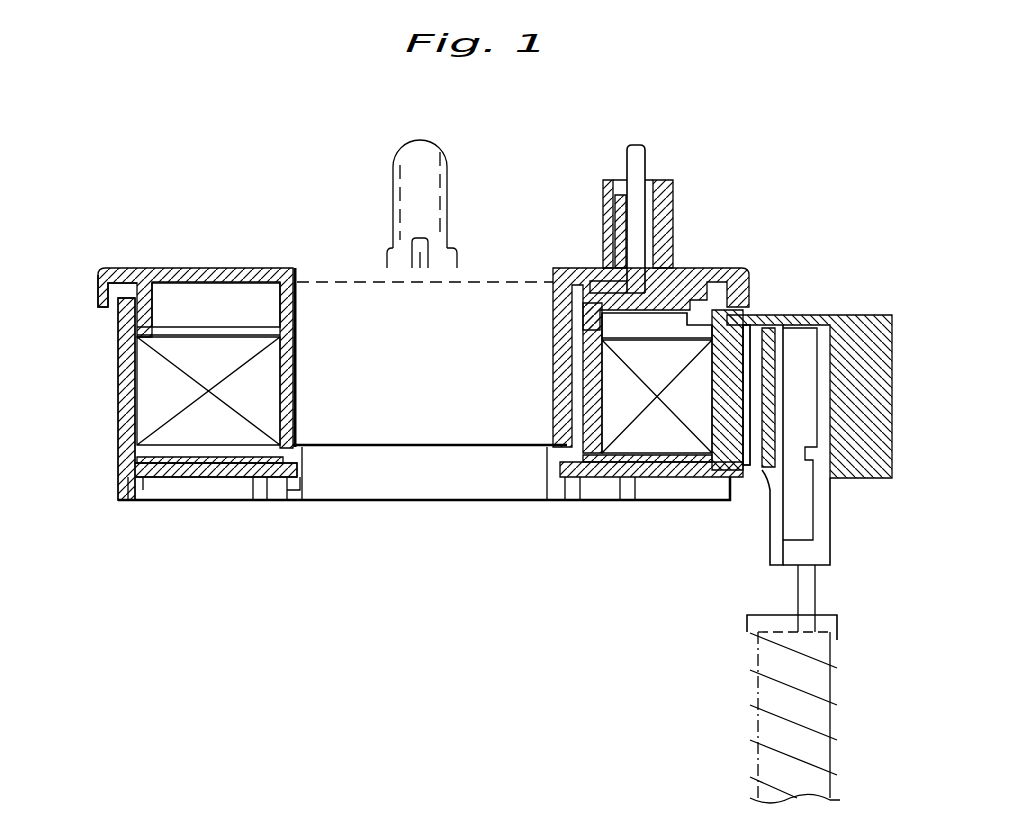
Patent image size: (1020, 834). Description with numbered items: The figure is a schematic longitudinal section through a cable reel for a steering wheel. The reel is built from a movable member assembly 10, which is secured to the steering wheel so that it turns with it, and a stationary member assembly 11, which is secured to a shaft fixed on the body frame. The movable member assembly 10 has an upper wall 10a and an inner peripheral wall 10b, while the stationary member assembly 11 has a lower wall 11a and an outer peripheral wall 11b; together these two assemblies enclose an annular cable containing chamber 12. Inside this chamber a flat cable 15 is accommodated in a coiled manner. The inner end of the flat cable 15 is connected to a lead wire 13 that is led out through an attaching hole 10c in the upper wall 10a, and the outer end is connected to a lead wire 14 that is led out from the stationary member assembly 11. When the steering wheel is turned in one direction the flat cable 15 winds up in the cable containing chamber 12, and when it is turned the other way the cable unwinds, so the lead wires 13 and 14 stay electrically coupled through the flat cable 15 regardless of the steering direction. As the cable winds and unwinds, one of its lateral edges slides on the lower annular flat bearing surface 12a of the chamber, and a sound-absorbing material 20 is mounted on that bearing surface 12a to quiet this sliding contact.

The movable member assembly 10 is at (254, 256).
The upper wall 10a is at (177, 267).
The inner peripheral wall 10b is at (295, 388).
The attaching hole 10c is at (637, 250).
The stationary member assembly 11 is at (389, 453).
The lower wall 11a is at (142, 440).
The outer peripheral wall 11b is at (123, 358).
The cable containing chamber 12 is at (133, 333).
The lower annular flat bearing surface 12a is at (160, 463).
The lead wire 13 is at (636, 215).
The lead wire 14 is at (793, 525).
The flat cable 15 is at (247, 432).
The sound-absorbing material 20 is at (125, 462).